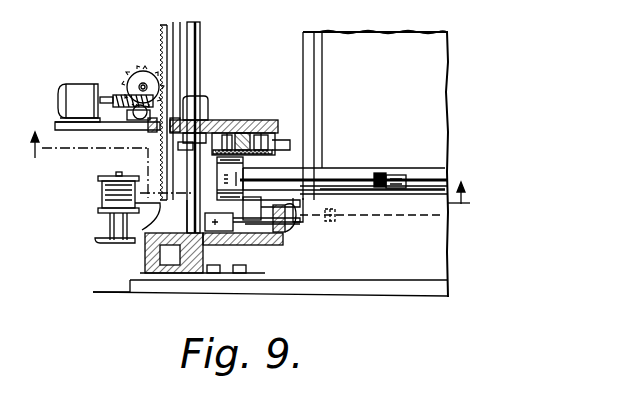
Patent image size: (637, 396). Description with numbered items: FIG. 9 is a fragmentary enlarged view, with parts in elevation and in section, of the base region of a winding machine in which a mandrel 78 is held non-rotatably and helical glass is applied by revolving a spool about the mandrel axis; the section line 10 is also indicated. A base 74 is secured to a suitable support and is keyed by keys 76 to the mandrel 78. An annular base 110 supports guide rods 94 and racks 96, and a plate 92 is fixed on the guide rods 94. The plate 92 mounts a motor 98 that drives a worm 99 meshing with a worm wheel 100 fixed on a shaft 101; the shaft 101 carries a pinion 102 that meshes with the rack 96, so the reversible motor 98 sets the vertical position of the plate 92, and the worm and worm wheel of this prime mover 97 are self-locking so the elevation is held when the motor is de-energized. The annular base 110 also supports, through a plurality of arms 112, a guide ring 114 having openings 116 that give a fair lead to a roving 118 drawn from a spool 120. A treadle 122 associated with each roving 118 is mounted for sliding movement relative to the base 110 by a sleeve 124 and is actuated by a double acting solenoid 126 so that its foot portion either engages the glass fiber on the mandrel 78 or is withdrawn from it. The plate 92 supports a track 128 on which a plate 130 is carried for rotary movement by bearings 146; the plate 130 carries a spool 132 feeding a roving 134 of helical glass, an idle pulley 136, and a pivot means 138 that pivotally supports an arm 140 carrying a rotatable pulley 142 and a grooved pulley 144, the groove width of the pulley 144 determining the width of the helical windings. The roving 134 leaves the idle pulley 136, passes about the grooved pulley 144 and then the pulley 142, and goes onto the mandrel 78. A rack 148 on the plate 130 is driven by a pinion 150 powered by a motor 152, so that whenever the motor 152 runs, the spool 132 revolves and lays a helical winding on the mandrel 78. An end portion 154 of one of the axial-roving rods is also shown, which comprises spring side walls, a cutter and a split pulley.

The section line 10 is at (249, 181).
The base 74 is at (373, 278).
The keys 76 is at (340, 222).
The mandrel 78 is at (352, 42).
The plate 92 is at (255, 120).
The guide rods 94 is at (198, 47).
The rack 96 is at (160, 30).
The prime mover 97 is at (85, 66).
The motor 98 is at (70, 99).
The worm 99 is at (117, 93).
The worm wheel 100 is at (150, 90).
The shaft 101 is at (139, 80).
The pinion 102 is at (180, 46).
The annular base 110 is at (152, 258).
The arms 112 is at (250, 206).
The guide ring 114 is at (290, 232).
The openings 116 is at (270, 198).
The roving 118 is at (108, 228).
The spool 120 is at (108, 198).
The treadle 122 is at (302, 216).
The sleeve 124 is at (222, 231).
The double acting solenoid 126 is at (222, 176).
The track 128 is at (242, 133).
The plate 130 is at (268, 147).
The spool 132 is at (228, 192).
The roving 134 is at (337, 182).
The idle sheave or pulley 136 is at (112, 242).
The pivot means 138 is at (258, 262).
The arm 140 is at (356, 188).
The pulley or sheave 142 is at (400, 177).
The grooved pulley 144 is at (378, 174).
The bearings 146 is at (226, 118).
The rack 148 is at (222, 178).
The pinion 150 is at (178, 146).
The motor 152 is at (160, 133).
The end portion 154 is at (323, 209).